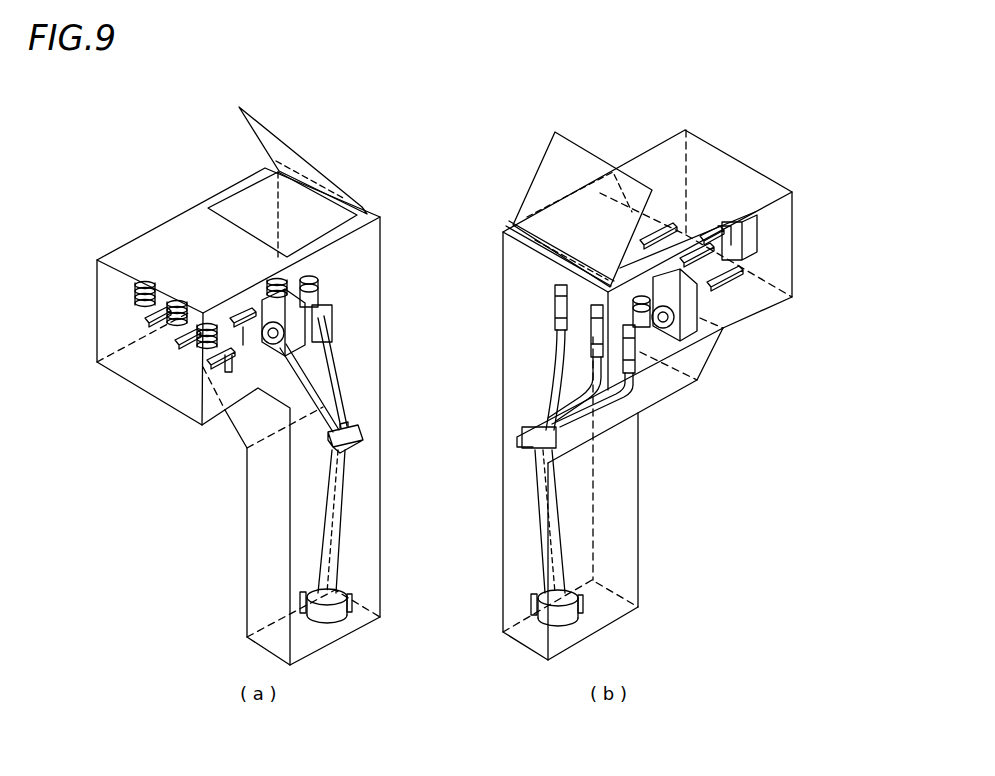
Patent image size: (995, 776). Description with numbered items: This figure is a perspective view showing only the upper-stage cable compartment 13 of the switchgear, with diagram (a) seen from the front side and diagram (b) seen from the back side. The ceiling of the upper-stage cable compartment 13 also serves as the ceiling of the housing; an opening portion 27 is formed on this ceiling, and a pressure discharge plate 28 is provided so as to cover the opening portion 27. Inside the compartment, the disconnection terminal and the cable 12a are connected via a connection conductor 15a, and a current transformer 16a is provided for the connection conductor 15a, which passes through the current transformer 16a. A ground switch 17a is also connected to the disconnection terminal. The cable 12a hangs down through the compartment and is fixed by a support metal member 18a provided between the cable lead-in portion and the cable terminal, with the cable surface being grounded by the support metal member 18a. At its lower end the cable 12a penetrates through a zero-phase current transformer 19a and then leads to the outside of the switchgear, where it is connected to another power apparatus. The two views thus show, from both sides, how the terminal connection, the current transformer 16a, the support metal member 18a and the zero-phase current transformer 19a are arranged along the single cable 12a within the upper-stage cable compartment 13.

The upper-stage cable compartment 13 is at (180, 228).
The opening portion 27 is at (258, 200).
The pressure discharge plate 28 is at (312, 150).
The connection conductor 15a is at (190, 352).
The current transformer 16a is at (320, 348).
The ground switch 17a is at (258, 352).
The support metal member 18a is at (358, 438).
The cable 12a is at (355, 470).
The zero-phase current transformer 19a is at (340, 620).